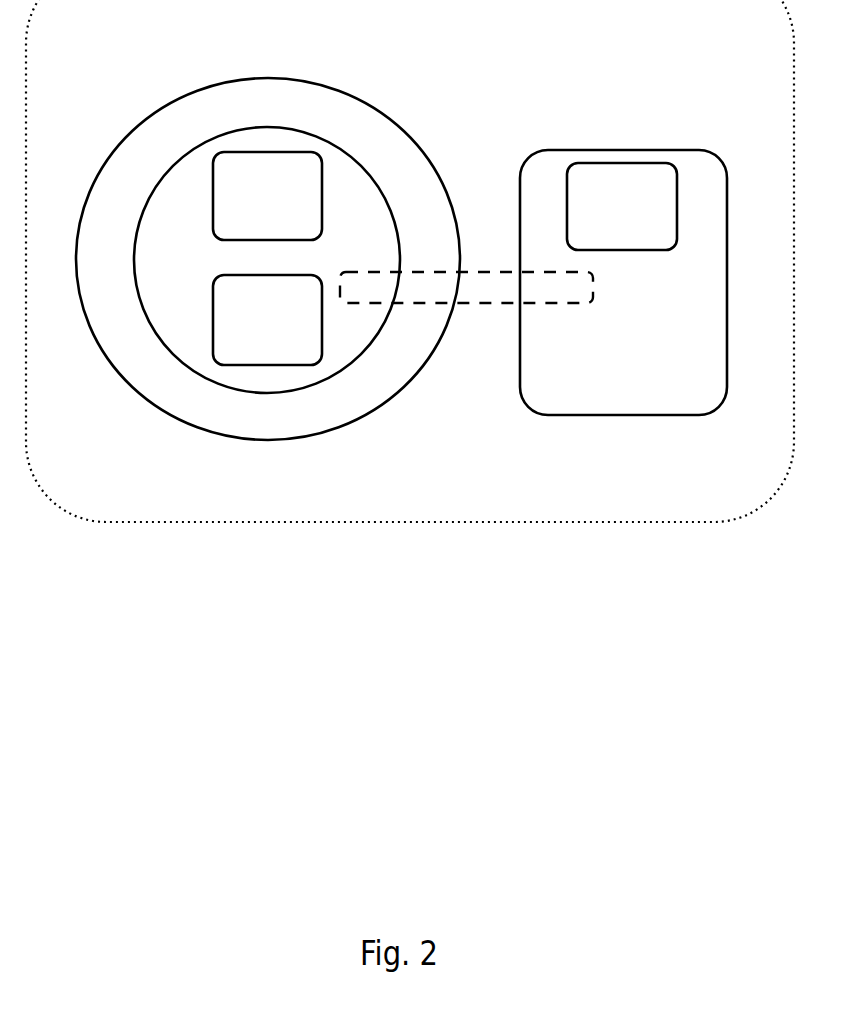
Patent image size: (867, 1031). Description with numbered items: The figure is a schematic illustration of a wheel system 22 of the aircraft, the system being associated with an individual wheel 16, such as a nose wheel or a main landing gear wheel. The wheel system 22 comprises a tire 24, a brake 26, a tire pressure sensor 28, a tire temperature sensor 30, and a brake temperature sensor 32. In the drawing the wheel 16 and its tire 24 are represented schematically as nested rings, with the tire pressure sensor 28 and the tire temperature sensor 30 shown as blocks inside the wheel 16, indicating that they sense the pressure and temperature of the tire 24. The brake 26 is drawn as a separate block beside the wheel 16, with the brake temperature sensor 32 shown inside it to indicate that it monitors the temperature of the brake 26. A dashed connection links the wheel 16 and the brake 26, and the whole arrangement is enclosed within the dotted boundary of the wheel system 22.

The wheel system 22 is at (117, 34).
The wheel 16 is at (192, 323).
The tire 24 is at (408, 352).
The brake 26 is at (647, 332).
The tire pressure sensor 28 is at (287, 210).
The tire temperature sensor 30 is at (287, 335).
The brake temperature sensor 32 is at (642, 225).